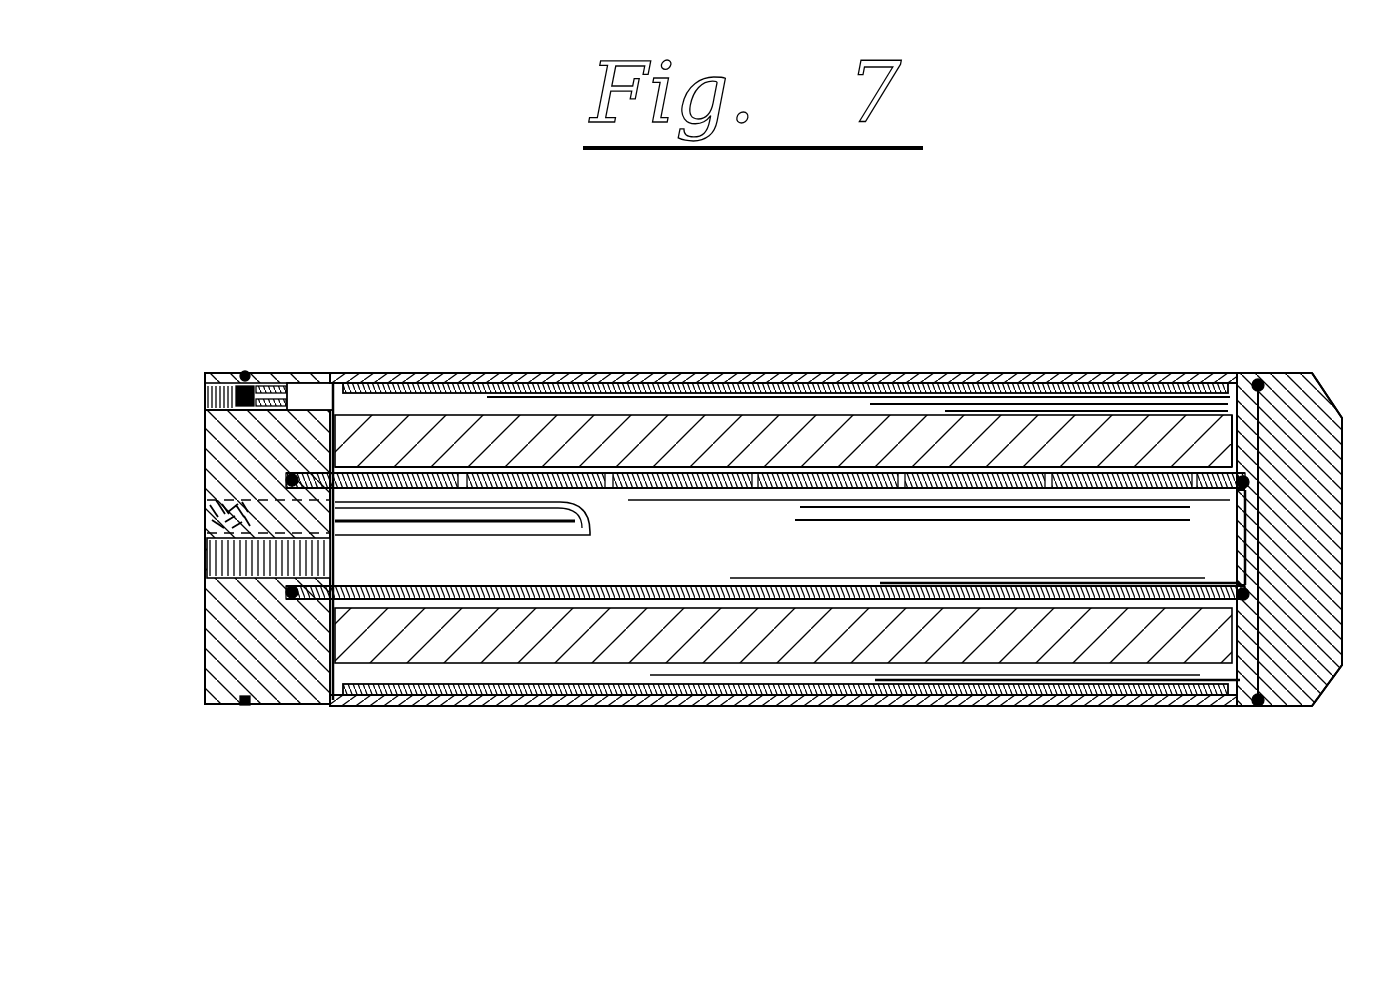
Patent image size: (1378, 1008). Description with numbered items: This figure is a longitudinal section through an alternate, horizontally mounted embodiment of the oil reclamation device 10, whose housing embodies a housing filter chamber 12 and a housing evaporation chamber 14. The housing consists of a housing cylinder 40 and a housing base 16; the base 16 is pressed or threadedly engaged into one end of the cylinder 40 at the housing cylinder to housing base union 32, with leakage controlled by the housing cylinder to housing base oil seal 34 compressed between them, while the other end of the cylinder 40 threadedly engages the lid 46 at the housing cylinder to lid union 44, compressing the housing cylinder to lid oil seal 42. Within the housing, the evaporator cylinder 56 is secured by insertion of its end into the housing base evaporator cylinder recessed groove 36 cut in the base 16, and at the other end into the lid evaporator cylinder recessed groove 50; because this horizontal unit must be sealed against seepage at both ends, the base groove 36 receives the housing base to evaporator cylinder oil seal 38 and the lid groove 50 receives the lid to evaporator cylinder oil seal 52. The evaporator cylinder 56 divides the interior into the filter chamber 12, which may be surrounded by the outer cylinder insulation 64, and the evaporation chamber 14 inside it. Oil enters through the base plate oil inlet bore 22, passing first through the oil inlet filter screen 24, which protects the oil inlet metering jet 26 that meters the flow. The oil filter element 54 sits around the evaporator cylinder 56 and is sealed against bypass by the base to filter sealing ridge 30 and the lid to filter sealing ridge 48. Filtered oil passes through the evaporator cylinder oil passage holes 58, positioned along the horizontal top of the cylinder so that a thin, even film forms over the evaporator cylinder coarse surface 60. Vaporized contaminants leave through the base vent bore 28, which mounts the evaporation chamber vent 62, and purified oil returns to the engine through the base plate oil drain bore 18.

The oil reclamation device housing 10 is at (1008, 182).
The housing filter chamber 12 is at (765, 675).
The housing evaporation chamber 14 is at (690, 565).
The housing base 16 is at (211, 582).
The base plate oil drain bore 18 is at (235, 552).
The base plate oil inlet bore 22 is at (217, 372).
The oil inlet filter screen 24 is at (210, 436).
The oil inlet metering jet 26 is at (268, 378).
The base vent bore 28 is at (215, 517).
The base to filter sealing ridge 30 is at (350, 465).
The housing cylinder to housing base union 32 is at (312, 380).
The housing cylinder to housing base oil seal 34 is at (245, 372).
The housing base evaporator cylinder recessed groove 36 is at (292, 480).
The housing base to evaporator cylinder oil seal 38 is at (335, 455).
The housing cylinder 40 is at (667, 374).
The housing cylinder to lid oil seal 42 is at (1260, 385).
The housing cylinder to lid union 44 is at (1246, 385).
The lid 46 is at (1322, 415).
The lid to filter sealing ridge 48 is at (1233, 457).
The lid evaporator cylinder recessed groove 50 is at (1235, 475).
The lid to evaporator cylinder oil seal 52 is at (1258, 700).
The oil filter element 54 is at (1122, 642).
The evaporator cylinder 56 is at (1008, 592).
The evaporator cylinder oil passage holes 58 is at (900, 480).
The evaporator cylinder coarse surface 60 is at (972, 588).
The evaporation chamber vent 62 is at (565, 533).
The outer cylinder insulation 64 is at (435, 694).